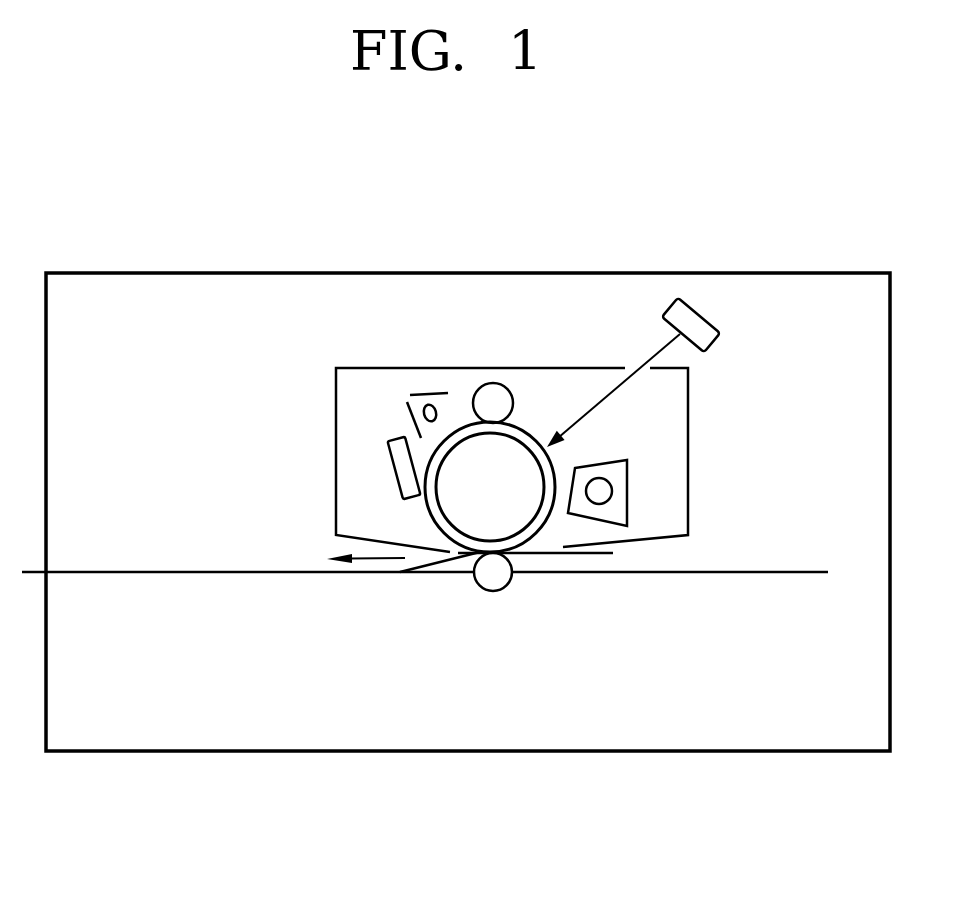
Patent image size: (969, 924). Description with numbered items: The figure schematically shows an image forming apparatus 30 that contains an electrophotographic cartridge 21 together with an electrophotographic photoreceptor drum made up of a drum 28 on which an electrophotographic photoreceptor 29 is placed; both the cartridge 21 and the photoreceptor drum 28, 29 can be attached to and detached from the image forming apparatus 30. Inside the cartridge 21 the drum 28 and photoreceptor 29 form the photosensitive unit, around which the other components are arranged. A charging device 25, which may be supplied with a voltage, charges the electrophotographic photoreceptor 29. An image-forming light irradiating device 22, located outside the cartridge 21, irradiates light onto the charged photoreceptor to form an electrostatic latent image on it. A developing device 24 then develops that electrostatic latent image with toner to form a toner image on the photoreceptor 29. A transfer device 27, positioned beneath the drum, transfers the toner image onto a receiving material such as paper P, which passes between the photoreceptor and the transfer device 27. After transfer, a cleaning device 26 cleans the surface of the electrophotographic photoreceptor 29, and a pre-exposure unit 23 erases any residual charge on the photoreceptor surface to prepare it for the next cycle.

The electrophotographic cartridge 21 is at (420, 367).
The image-forming light irradiating device 22 is at (717, 332).
The pre-exposure unit 23 is at (407, 400).
The developing device 24 is at (626, 483).
The charging device 25 is at (516, 402).
The cleaning device 26 is at (390, 453).
The transfer device 27 is at (495, 593).
The drum 28 is at (468, 540).
The electrophotographic photoreceptor 29 is at (428, 516).
The image forming apparatus 30 is at (588, 272).
The paper P is at (595, 556).